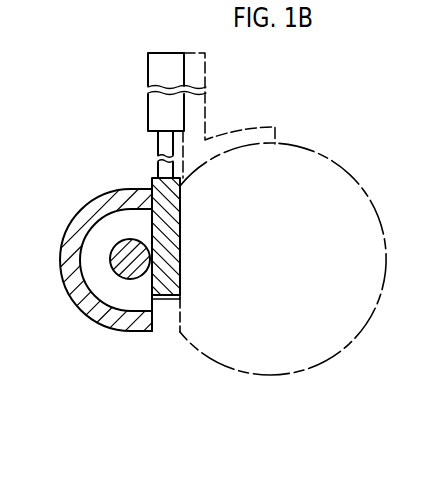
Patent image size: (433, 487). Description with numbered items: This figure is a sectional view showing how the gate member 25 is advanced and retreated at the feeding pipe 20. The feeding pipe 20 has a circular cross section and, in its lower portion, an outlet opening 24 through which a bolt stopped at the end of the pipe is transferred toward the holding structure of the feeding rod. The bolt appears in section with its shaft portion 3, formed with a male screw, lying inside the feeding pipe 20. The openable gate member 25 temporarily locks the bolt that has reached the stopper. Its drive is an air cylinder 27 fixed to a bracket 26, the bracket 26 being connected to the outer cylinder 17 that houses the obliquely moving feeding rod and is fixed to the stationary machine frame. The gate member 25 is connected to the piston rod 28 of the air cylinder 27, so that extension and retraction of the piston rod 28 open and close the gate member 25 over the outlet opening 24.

The shaft portion 3 is at (114, 272).
The outer cylinder 17 is at (333, 153).
The feeding pipe 20 is at (92, 200).
The outlet opening 24 is at (148, 303).
The gate member 25 is at (180, 233).
The bracket 26 is at (246, 127).
The air cylinder 27 is at (157, 110).
The piston rod 28 is at (163, 147).